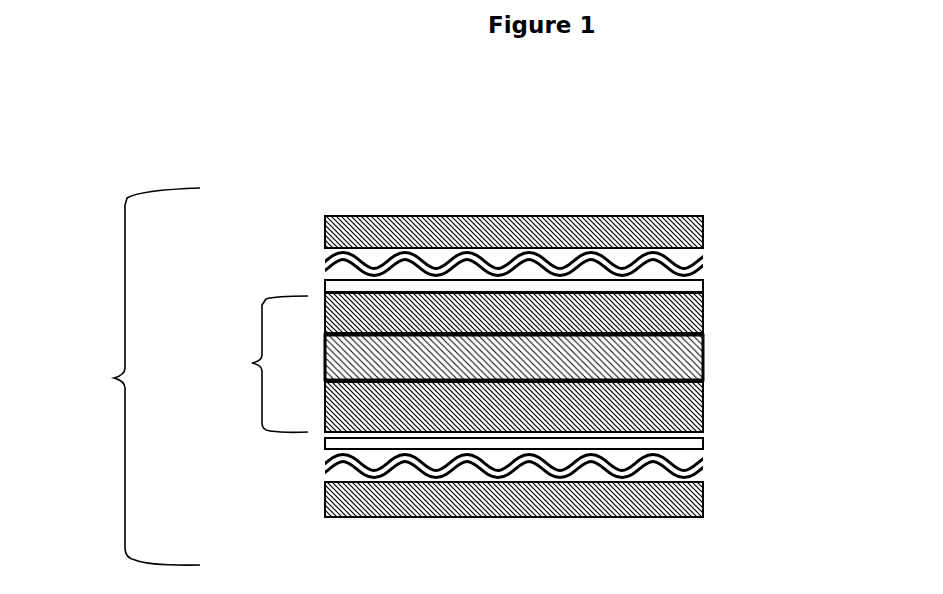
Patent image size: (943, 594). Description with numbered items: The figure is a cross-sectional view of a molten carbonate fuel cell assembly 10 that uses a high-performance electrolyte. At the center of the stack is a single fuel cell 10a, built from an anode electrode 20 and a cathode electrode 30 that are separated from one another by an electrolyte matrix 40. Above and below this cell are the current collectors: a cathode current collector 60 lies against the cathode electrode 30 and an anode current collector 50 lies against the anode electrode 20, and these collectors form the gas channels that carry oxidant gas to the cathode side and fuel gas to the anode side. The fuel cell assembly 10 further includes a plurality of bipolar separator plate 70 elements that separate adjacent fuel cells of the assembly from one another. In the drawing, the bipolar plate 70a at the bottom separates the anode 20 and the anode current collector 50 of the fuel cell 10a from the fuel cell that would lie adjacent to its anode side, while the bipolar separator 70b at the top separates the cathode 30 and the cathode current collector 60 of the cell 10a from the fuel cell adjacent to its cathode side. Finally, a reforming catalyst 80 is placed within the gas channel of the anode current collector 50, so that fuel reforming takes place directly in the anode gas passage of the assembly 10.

The molten carbonate fuel cell assembly 10 is at (116, 378).
The fuel cell 10a is at (253, 363).
The anode electrode 20 is at (703, 405).
The cathode electrode 30 is at (703, 318).
The electrolyte matrix 40 is at (703, 357).
The anode current collector 50 is at (703, 456).
The cathode current collector 60 is at (703, 252).
The bipolar separator plate 70 is at (382, 517).
The bipolar plate 70a is at (703, 500).
The bipolar separator 70b is at (703, 228).
The reforming catalyst 80 is at (327, 482).